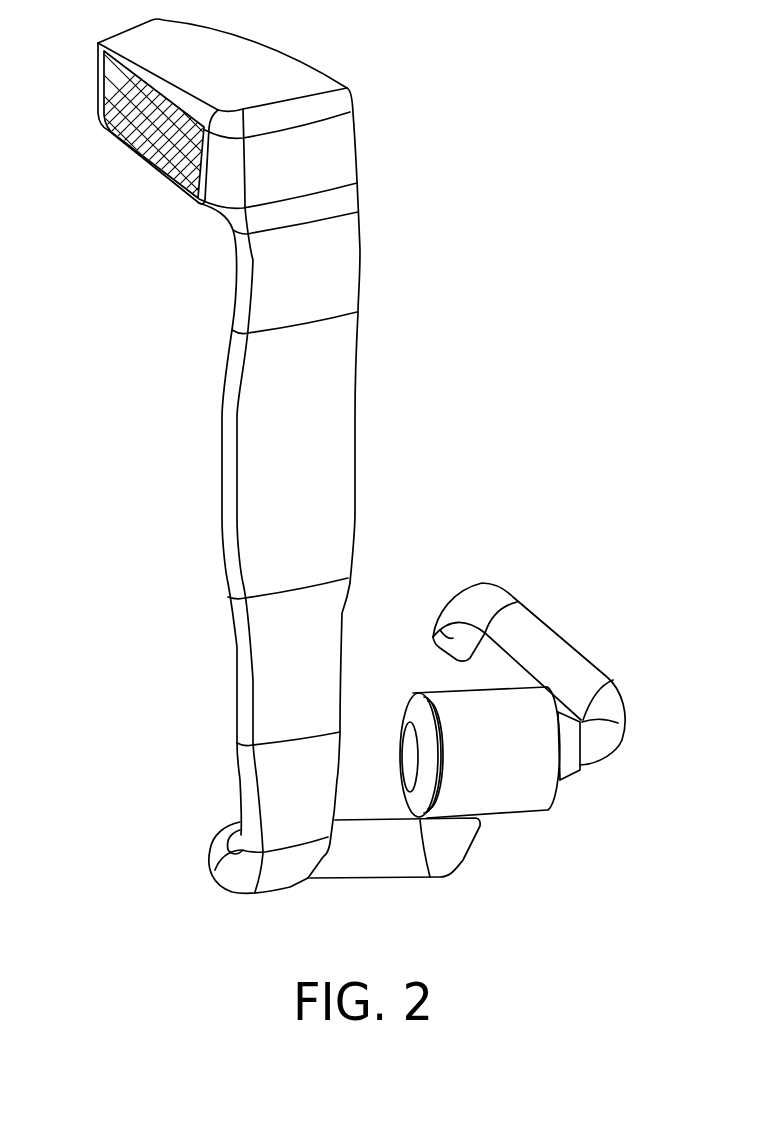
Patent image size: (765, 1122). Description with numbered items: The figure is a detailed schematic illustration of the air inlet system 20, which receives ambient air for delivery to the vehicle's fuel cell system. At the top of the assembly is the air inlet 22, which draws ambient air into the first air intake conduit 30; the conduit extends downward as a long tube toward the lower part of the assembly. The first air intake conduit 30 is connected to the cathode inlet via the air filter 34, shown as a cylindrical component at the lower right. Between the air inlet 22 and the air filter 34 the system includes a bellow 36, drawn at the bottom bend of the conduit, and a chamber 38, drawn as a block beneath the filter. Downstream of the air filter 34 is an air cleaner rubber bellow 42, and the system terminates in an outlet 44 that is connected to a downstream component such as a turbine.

The air inlet system 20 is at (447, 283).
The air inlet 22 is at (133, 157).
The first air intake conduit 30 is at (300, 472).
The air filter 34 is at (502, 758).
The bellow 36 is at (290, 795).
The chamber 38 is at (450, 840).
The air cleaner rubber bellow 42 is at (567, 750).
The outlet 44 is at (438, 622).